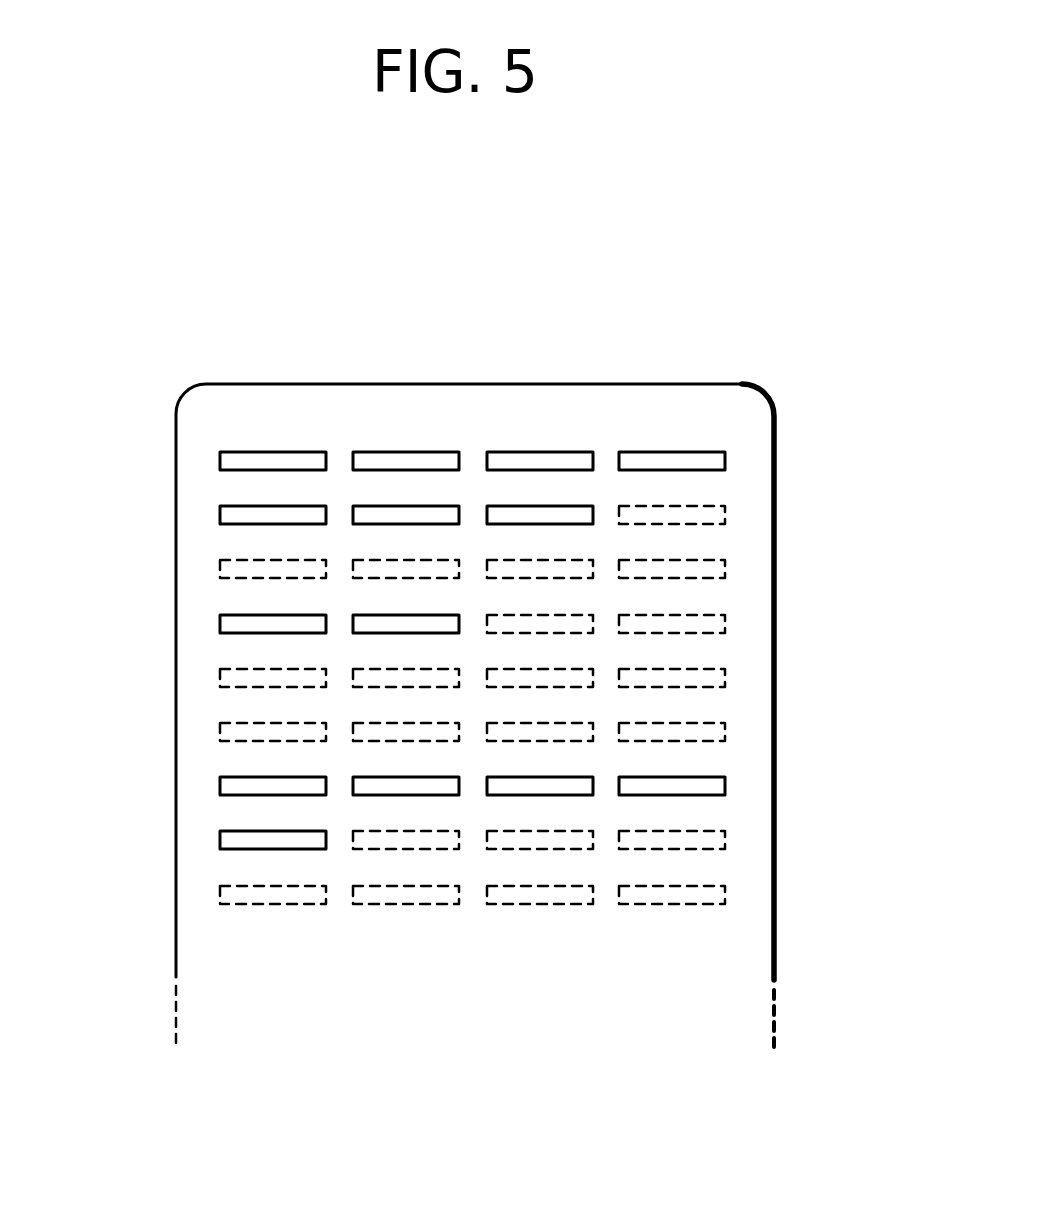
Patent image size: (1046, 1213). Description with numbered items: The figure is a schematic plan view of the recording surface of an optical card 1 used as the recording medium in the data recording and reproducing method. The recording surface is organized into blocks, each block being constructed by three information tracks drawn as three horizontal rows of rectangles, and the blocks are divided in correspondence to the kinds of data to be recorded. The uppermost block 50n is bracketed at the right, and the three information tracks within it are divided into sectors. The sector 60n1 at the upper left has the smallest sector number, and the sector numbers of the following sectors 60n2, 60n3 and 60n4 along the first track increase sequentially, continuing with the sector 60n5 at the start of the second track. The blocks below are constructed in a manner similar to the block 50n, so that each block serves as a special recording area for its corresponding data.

The optical card 1 is at (617, 388).
The block 50n is at (466, 450).
The sector 60n1 is at (249, 452).
The sector 60n2 is at (405, 452).
The sector 60n3 is at (542, 452).
The sector 60n4 is at (705, 452).
The sector 60n5 is at (199, 505).